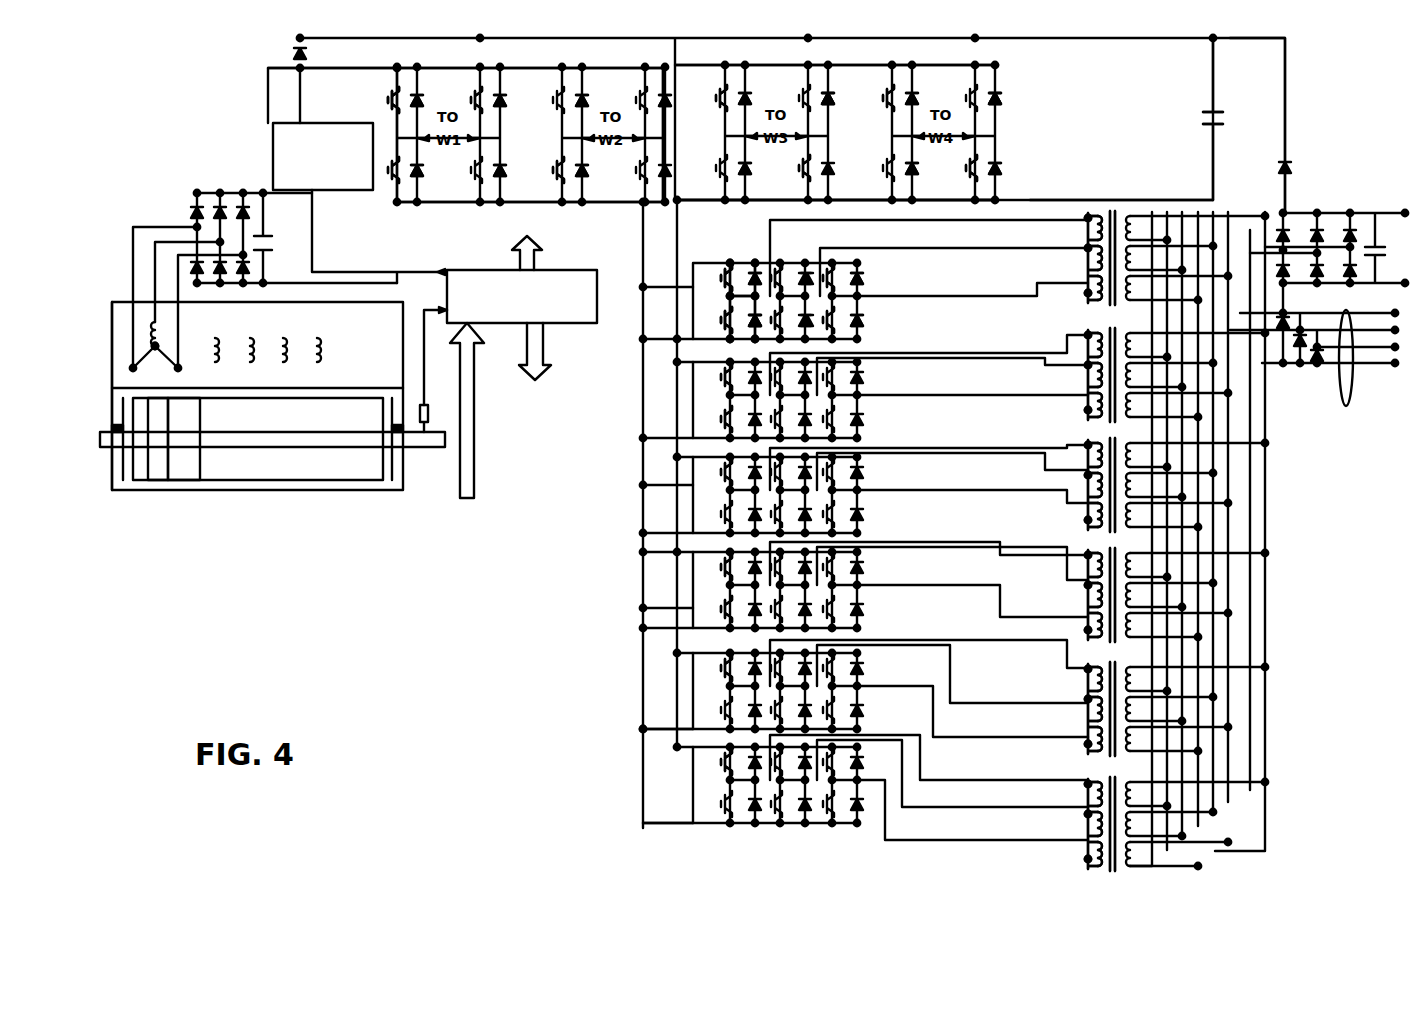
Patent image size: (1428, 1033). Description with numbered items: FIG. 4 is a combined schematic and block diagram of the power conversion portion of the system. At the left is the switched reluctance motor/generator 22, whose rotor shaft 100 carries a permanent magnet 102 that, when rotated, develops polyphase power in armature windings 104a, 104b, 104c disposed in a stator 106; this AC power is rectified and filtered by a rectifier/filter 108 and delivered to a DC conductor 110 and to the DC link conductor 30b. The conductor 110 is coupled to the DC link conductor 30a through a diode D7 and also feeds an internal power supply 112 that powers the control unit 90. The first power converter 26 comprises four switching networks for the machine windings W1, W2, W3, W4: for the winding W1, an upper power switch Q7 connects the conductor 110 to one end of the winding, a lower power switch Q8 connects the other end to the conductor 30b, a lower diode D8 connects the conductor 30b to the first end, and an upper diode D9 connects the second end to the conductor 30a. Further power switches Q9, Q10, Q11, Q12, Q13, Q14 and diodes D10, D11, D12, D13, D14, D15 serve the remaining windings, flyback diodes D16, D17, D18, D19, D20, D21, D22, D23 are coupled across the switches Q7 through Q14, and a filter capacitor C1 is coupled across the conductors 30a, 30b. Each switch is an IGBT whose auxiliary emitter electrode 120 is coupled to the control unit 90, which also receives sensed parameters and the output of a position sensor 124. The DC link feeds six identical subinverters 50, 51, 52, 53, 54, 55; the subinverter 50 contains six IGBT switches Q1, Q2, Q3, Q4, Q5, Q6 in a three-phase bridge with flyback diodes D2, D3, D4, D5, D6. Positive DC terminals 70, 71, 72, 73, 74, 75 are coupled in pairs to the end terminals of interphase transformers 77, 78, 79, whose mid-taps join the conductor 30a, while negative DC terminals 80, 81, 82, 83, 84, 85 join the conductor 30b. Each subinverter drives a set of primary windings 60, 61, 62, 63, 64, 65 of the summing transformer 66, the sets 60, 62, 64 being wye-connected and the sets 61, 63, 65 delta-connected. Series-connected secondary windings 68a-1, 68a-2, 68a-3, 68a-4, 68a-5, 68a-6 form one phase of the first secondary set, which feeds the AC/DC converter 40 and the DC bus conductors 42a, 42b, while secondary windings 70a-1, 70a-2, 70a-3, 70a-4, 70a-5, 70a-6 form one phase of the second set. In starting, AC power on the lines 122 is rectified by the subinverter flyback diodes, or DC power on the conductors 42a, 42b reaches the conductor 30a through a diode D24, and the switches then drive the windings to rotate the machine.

The diode D7 is at (295, 47).
The first power converter 26 is at (1298, 58).
The filter capacitor C1 is at (1216, 114).
The diode D24 is at (1292, 165).
The DC conductor 110 is at (268, 100).
The first or upper power switch Q7 is at (392, 100).
The auxiliary emitter electrode 120 is at (384, 110).
The second or upper diode D9 is at (458, 90).
The flyback diode D16 is at (424, 68).
The flyback diode D17 is at (500, 162).
The second or lower power switch Q8 is at (446, 163).
The first or lower diode D8 is at (412, 179).
The power switch Q9 is at (549, 94).
The diode D10 is at (575, 168).
The power switch Q10 is at (605, 165).
The flyback diode D18 is at (594, 68).
The diode D11 is at (660, 98).
The DC link conductor 30a is at (836, 42).
The power switch Q11 is at (722, 96).
The flyback diode D19 is at (740, 106).
The diode D12 is at (740, 162).
The flyback diode D20 is at (746, 68).
The diode D13 is at (822, 96).
The power switch Q12 is at (805, 169).
The power switch Q13 is at (888, 92).
The flyback diode D21 is at (896, 107).
The diode D14 is at (908, 171).
The flyback diode D22 is at (915, 115).
The power switch Q14 is at (970, 168).
The diode D15 is at (998, 98).
The flyback diode D23 is at (1003, 165).
The DC link conductor 30b is at (1043, 197).
The internal power supply 112 is at (272, 150).
The rectifier/filter 108 is at (227, 193).
The switched reluctance motor/generator 22 is at (254, 490).
The stator 106 is at (106, 322).
The armature winding 104a is at (133, 300).
The armature winding 104c is at (155, 346).
The electrical winding W1 is at (215, 338).
The electrical winding W2 is at (250, 338).
The electrical winding W3 is at (283, 338).
The electrical winding W4 is at (317, 348).
The permanent magnet 102 is at (160, 480).
The armature winding 104b is at (185, 400).
The rotor shaft 100 is at (200, 445).
The position sensor 124 is at (432, 424).
The control unit 90 is at (588, 270).
The subinverter 50 is at (730, 236).
The positive DC terminal 70 is at (727, 257).
The first interphase transformer 77 is at (643, 287).
The negative DC terminal 80 is at (643, 339).
The power switch Q1 is at (730, 283).
The power switch Q2 is at (730, 315).
The flyback diode D2 is at (755, 321).
The power switch Q4 is at (780, 321).
The power switch Q3 is at (785, 280).
The flyback diode D3 is at (808, 282).
The power switch Q5 is at (840, 280).
The flyback diode D5 is at (860, 283).
The power switch Q6 is at (838, 319).
The flyback diode D6 is at (863, 323).
The flyback diode D4 is at (815, 327).
The subinverter 51 is at (723, 385).
The positive DC terminal 71 is at (722, 375).
The positive DC terminal 72 is at (722, 437).
The subinverter 52 is at (862, 489).
The second interphase transformer 78 is at (682, 490).
The negative DC terminal 81 is at (643, 485).
The subinverter 53 is at (868, 579).
The positive DC terminal 73 is at (720, 567).
The positive DC terminal 74 is at (717, 630).
The negative DC terminal 82 is at (643, 552).
The negative DC terminal 83 is at (643, 608).
The subinverter 54 is at (862, 674).
The third interphase transformer 79 is at (692, 676).
The negative DC terminal 84 is at (656, 725).
The subinverter 55 is at (753, 785).
The positive DC terminal 75 is at (703, 750).
The negative DC terminal 85 is at (688, 826).
The set of primary windings 60 is at (1072, 290).
The secondary winding 68a-1 is at (1095, 248).
The secondary winding 70a-1 is at (1118, 211).
The set of primary windings 61 is at (1067, 387).
The secondary winding 68a-2 is at (1085, 372).
The secondary winding 70a-2 is at (1117, 330).
The set of primary windings 62 is at (1067, 510).
The secondary winding 68a-3 is at (1080, 478).
The secondary winding 70a-3 is at (1115, 440).
The set of primary windings 63 is at (1050, 627).
The secondary winding 68a-4 is at (1065, 607).
The secondary winding 70a-4 is at (1123, 552).
The set of primary windings 64 is at (1043, 745).
The secondary winding 68a-5 is at (1080, 685).
The secondary winding 70a-5 is at (1123, 665).
The set of primary windings 65 is at (1070, 850).
The secondary winding 68a-6 is at (1078, 822).
The secondary winding 70a-6 is at (1110, 780).
The summing transformer 66 is at (1133, 868).
The AC/DC converter 40 is at (1319, 254).
The DC bus conductor 42a is at (1400, 210).
The DC bus conductor 42b is at (1318, 324).
The set of lines 122 is at (1345, 398).